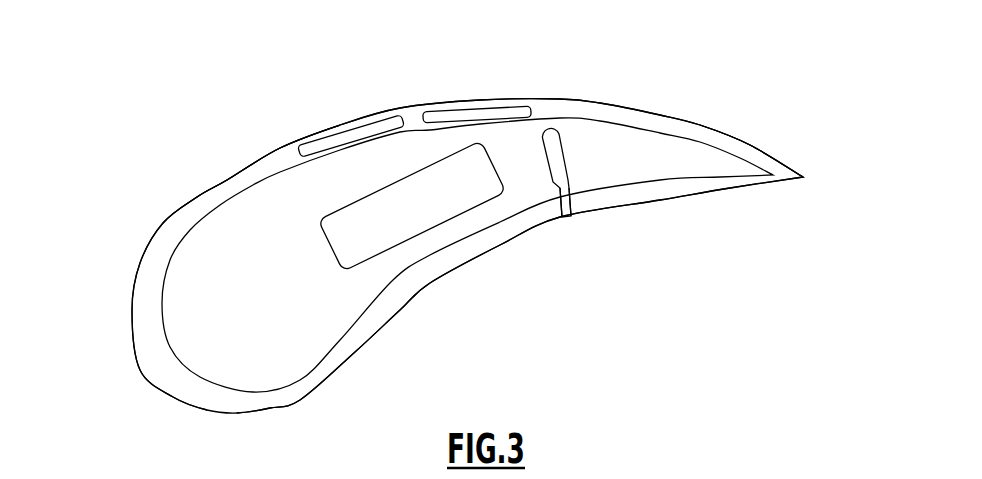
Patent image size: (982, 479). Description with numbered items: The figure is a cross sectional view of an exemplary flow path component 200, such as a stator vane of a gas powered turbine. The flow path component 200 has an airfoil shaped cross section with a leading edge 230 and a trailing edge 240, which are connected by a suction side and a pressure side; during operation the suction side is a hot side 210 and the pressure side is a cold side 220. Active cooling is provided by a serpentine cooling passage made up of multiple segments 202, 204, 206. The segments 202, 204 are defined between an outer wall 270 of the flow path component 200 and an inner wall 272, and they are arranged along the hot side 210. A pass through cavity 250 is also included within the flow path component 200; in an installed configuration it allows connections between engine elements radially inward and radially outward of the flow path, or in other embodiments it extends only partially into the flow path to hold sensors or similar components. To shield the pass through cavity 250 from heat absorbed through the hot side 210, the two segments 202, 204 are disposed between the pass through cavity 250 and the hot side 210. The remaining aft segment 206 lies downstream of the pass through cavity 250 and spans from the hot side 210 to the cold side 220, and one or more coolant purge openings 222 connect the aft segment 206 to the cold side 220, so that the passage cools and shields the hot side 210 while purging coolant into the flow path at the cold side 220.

The flow path component 200 is at (762, 68).
The serpentine cooling passage segment 202 is at (352, 130).
The serpentine cooling passage segment 204 is at (483, 105).
The aft segment 206 is at (562, 168).
The hot side 210 is at (583, 103).
The cold side 220 is at (355, 352).
The coolant purge opening 222 is at (562, 208).
The leading edge 230 is at (135, 353).
The trailing edge 240 is at (803, 177).
The pass through cavity 250 is at (425, 205).
The outer wall 270 is at (217, 188).
The inner wall 272 is at (257, 185).